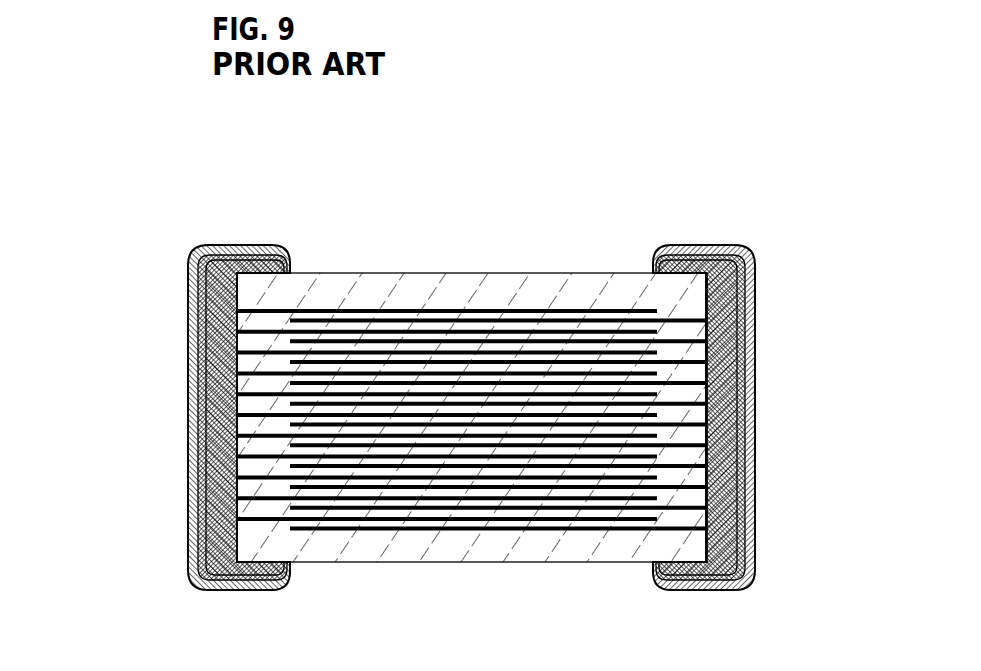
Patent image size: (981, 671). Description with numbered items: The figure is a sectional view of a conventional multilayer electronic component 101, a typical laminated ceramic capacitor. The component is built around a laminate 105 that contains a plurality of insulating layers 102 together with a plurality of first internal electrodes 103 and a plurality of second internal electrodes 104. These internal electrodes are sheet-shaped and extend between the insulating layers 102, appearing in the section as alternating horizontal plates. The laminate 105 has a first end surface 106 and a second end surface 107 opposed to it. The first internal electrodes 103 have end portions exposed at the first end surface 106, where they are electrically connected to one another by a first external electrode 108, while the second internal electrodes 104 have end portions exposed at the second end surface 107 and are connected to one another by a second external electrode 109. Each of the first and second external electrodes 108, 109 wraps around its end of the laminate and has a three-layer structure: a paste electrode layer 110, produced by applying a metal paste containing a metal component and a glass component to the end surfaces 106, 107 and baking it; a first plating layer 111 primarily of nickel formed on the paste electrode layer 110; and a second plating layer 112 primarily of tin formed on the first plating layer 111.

The multilayer electronic component 101 is at (262, 181).
The insulating layers 102 is at (393, 512).
The first internal electrodes 103 is at (388, 333).
The second internal electrodes 104 is at (483, 340).
The laminate 105 is at (578, 270).
The first end surface 106 is at (236, 403).
The second end surface 107 is at (743, 388).
The first external electrode 108 is at (104, 300).
The second external electrode 109 is at (847, 255).
The paste electrode layer 110 is at (216, 316).
The first plating layer 111 is at (205, 345).
The second plating layer 112 is at (194, 374).